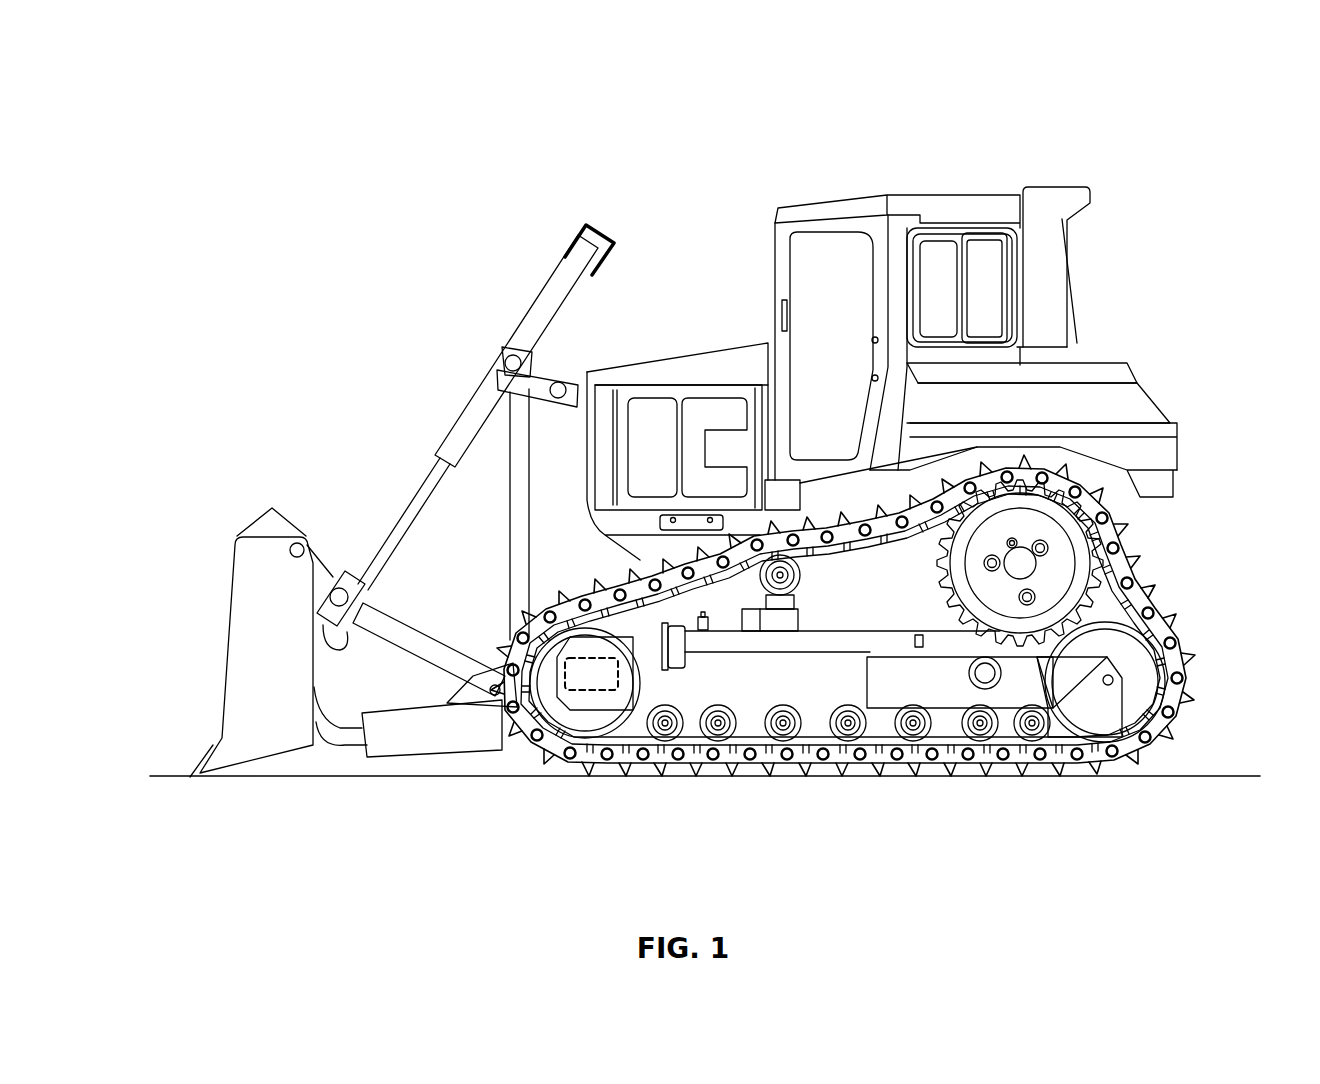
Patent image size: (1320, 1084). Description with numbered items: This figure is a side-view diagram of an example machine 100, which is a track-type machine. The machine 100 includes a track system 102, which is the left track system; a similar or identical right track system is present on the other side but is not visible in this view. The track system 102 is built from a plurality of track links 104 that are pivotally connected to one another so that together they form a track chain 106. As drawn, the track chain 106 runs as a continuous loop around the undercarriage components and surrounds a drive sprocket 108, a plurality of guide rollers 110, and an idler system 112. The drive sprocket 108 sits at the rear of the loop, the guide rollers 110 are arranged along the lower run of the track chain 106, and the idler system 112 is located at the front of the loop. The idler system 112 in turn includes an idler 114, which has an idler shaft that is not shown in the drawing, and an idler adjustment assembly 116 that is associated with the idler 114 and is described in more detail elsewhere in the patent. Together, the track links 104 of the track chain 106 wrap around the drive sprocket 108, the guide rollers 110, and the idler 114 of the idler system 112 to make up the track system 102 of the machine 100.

The machine 100 is at (262, 172).
The track system 102 is at (1170, 550).
The track links 104 is at (1180, 752).
The track chain 106 is at (1187, 786).
The drive sprocket 108 is at (1065, 552).
The guide rollers 110 is at (980, 737).
The idler system 112 is at (628, 620).
The idler 114 is at (536, 697).
The idler adjustment assembly 116 is at (597, 712).